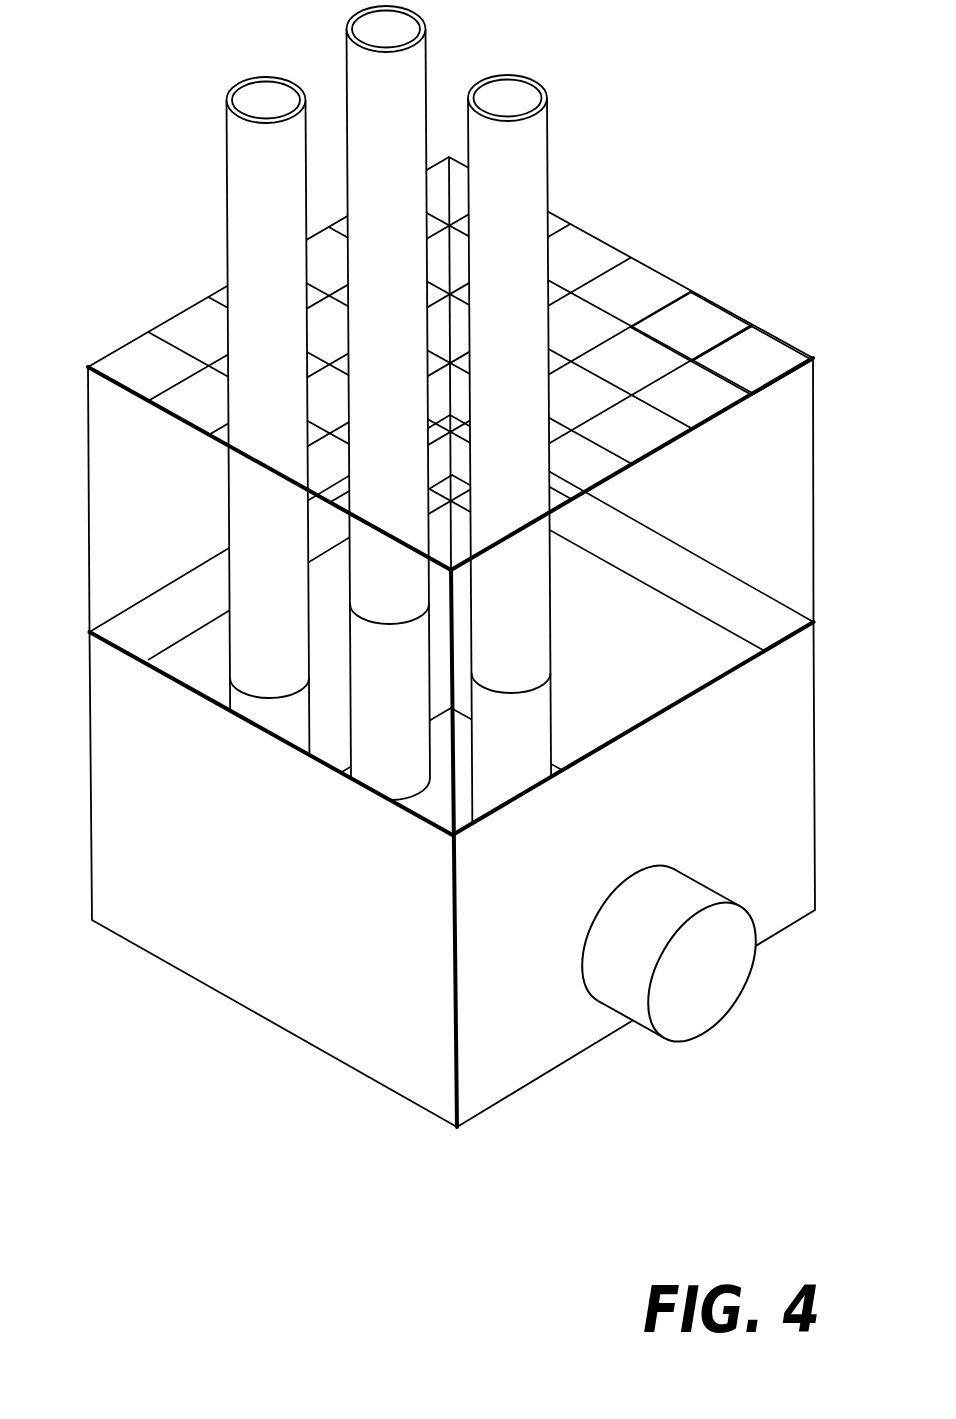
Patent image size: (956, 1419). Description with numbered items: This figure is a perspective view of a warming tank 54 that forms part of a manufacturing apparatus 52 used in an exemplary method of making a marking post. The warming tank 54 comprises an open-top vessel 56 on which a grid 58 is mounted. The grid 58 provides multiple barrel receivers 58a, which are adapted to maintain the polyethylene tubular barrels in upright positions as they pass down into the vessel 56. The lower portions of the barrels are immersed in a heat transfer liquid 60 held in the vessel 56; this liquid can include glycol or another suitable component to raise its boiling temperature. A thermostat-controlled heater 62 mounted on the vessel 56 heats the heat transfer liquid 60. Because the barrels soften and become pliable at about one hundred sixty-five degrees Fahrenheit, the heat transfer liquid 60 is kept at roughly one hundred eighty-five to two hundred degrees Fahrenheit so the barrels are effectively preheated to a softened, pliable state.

The manufacturing apparatus 52 is at (689, 100).
The warming tank 54 is at (89, 366).
The open-top vessel 56 is at (693, 550).
The grid 58 is at (645, 265).
The barrel receivers 58a is at (663, 311).
The heat transfer liquid 60 is at (668, 670).
The thermostat-controlled heater 62 is at (707, 890).